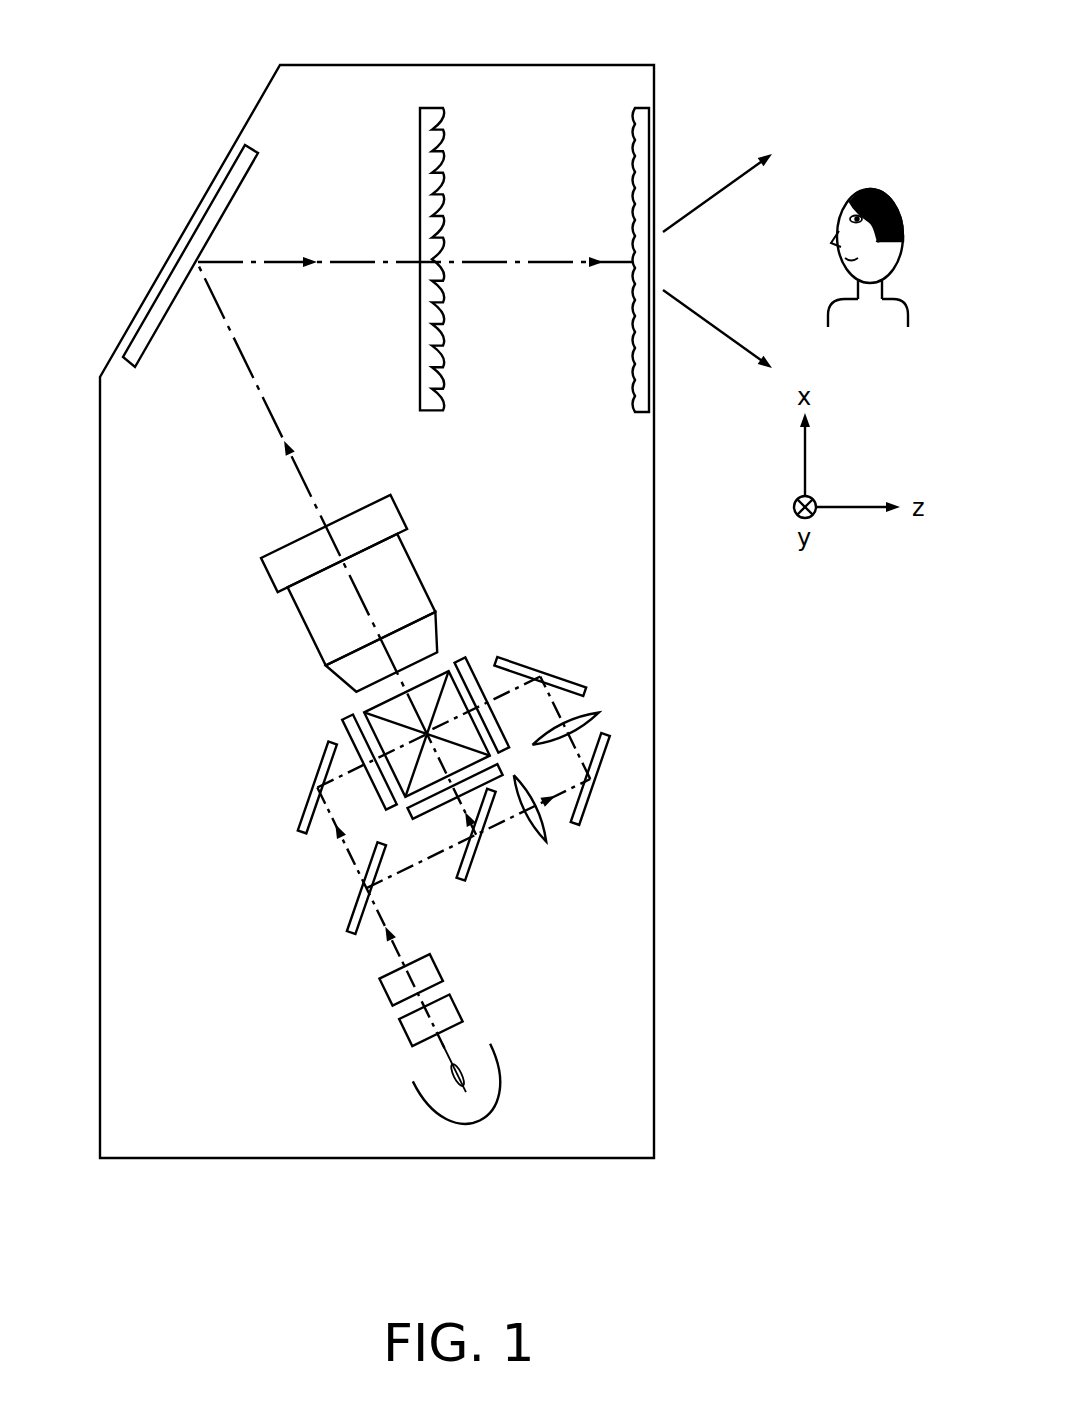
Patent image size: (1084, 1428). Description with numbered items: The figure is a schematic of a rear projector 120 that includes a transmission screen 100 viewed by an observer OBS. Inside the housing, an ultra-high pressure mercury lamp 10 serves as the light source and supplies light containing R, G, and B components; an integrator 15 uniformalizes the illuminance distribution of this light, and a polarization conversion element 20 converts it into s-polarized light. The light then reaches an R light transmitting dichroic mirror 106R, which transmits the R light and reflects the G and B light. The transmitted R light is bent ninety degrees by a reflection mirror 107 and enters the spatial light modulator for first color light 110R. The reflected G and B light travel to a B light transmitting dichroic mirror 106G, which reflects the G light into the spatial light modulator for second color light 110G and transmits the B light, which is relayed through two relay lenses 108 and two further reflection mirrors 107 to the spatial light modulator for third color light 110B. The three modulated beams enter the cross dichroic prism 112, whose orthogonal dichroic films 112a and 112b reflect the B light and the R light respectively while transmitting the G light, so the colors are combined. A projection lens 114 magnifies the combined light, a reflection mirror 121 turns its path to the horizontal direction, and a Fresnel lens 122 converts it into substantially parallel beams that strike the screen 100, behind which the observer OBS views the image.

The ultra-high pressure mercury lamp 10 is at (503, 1073).
The integrator 15 is at (457, 1005).
The polarization conversion element 20 is at (438, 963).
The transmission screen 100 is at (648, 108).
The R light transmitting dichroic mirror 106R is at (353, 922).
The B light transmitting dichroic mirror 106G is at (480, 852).
The reflection mirror 107 is at (303, 820).
The relay lens 108 is at (597, 713).
The spatial light modulator for first color light 110R is at (350, 723).
The spatial light modulator for second color light 110G is at (420, 822).
The spatial light modulator for third color light 110B is at (455, 665).
The cross dichroic prism 112 is at (392, 699).
The dichroic film 112a is at (375, 731).
The dichroic film 112b is at (450, 672).
The projection lens 114 is at (396, 510).
The projector 120 is at (700, 756).
The reflection mirror 121 is at (230, 177).
The Fresnel lens 122 is at (435, 108).
The observer OBS is at (875, 189).